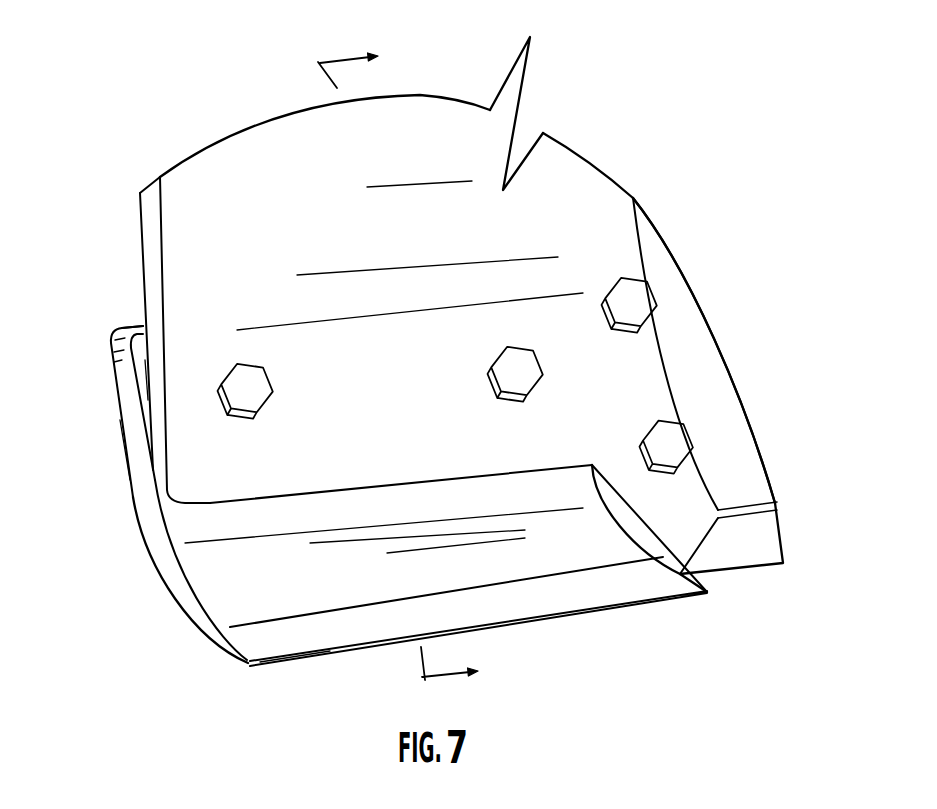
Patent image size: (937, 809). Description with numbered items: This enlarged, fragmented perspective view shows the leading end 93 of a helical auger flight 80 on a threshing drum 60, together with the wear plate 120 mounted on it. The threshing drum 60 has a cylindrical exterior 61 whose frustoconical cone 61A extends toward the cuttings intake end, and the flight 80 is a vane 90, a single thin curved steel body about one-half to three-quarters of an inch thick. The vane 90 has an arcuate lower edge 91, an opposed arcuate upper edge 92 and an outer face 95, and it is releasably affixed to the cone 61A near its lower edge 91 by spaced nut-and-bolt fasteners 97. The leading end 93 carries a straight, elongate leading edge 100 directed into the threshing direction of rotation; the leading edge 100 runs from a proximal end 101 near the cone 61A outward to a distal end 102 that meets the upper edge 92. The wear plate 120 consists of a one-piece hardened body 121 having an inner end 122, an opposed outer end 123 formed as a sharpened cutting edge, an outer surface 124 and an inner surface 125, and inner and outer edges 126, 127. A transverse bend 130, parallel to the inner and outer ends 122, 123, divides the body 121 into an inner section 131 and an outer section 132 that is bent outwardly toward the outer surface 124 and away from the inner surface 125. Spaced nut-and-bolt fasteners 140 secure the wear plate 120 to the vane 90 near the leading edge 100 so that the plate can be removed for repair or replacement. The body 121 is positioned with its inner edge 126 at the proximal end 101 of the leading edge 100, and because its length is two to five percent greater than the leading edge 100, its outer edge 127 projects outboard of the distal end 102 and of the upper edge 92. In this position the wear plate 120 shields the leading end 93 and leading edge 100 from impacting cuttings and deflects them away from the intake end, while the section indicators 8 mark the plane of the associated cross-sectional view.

The section line 8- 8 is at (408, 362).
The threshing drum 60 is at (720, 347).
The cylindrical exterior 61 is at (693, 328).
The cone 61A is at (737, 450).
The helical auger flight 80 is at (580, 152).
The vane 90 is at (440, 97).
The lower edge 91 is at (640, 233).
The upper edge 92 is at (140, 197).
The leading end 93 is at (447, 470).
The outer face 95 is at (327, 247).
The releasable fasteners 97 is at (640, 293).
The leading edge 100 is at (405, 487).
The proximal end 101 is at (587, 467).
The distal end 102 is at (178, 495).
The wear plate 120 is at (295, 665).
The body 121 is at (143, 400).
The inner end 122 is at (133, 323).
The outer end 123 is at (537, 618).
The outer surface 124 is at (275, 510).
The inner surface 125 is at (132, 487).
The inner edge 126 is at (600, 493).
The outer edge 127 is at (123, 387).
The bend 130 is at (260, 533).
The inner section 131 is at (150, 367).
The outer section 132 is at (253, 585).
The releasable fasteners 140 is at (258, 388).